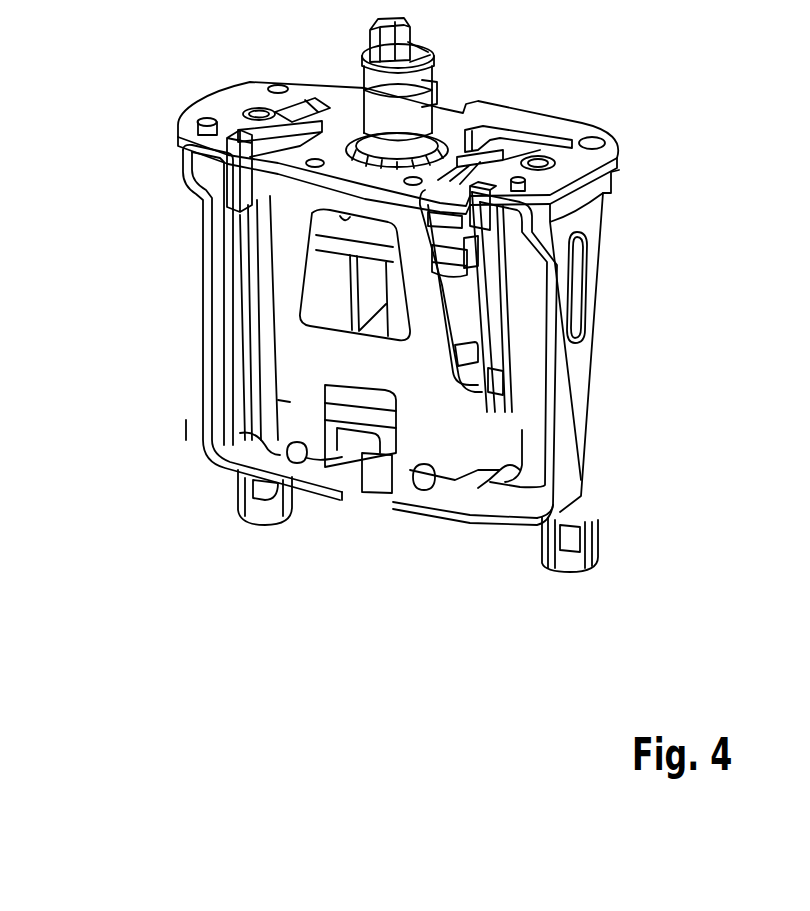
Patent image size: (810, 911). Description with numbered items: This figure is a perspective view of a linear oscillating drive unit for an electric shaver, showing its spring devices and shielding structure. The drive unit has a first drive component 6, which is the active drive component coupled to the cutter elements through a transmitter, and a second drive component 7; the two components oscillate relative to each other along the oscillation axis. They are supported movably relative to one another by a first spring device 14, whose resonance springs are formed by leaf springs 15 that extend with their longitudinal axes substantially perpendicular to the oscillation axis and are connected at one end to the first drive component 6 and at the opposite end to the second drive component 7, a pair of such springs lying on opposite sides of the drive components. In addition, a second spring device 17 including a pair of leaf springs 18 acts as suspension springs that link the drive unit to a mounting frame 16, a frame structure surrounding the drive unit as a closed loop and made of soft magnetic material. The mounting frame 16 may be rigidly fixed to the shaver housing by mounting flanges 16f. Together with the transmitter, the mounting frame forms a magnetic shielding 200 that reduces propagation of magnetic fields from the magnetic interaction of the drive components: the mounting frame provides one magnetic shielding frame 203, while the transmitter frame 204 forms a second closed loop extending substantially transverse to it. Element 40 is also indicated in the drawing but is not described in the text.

The first drive component 6 is at (342, 420).
The second drive component 7 is at (483, 259).
The first spring device 14 is at (523, 297).
The leaf spring 15 is at (532, 352).
The mounting frame 16 is at (585, 502).
The mounting flange 16f is at (263, 520).
The second spring device 17 is at (497, 380).
The leaf spring 18 is at (238, 266).
The damping element 40 is at (450, 467).
The magnetic shielding 200 is at (182, 418).
The magnetic shielding frame 203 is at (204, 388).
The transmitter frame 204 is at (290, 394).